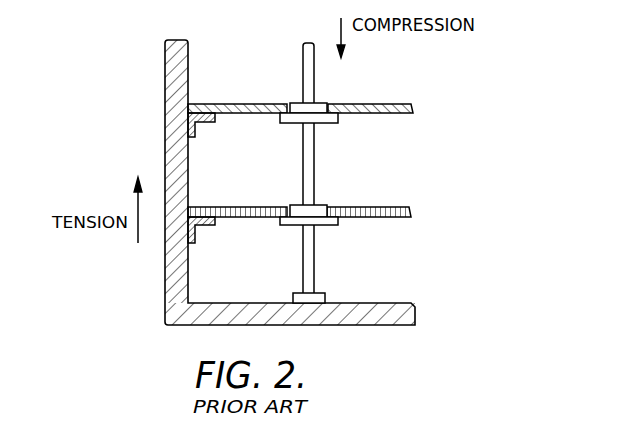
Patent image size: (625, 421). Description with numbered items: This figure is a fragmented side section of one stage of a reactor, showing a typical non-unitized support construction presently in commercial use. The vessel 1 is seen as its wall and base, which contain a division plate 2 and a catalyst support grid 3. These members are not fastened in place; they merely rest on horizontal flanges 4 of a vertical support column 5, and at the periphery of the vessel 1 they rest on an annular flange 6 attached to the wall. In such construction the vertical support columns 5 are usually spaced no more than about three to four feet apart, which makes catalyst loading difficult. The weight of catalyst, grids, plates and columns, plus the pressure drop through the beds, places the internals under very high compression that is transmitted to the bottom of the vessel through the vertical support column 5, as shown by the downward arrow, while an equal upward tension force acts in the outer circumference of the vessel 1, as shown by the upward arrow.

The vessel 1 is at (165, 107).
The division plate 2 is at (258, 104).
The catalyst support grid 3 is at (265, 207).
The horizontal flange 4 is at (291, 126).
The vertical support column 5 is at (316, 155).
The annular flange 6 is at (208, 124).